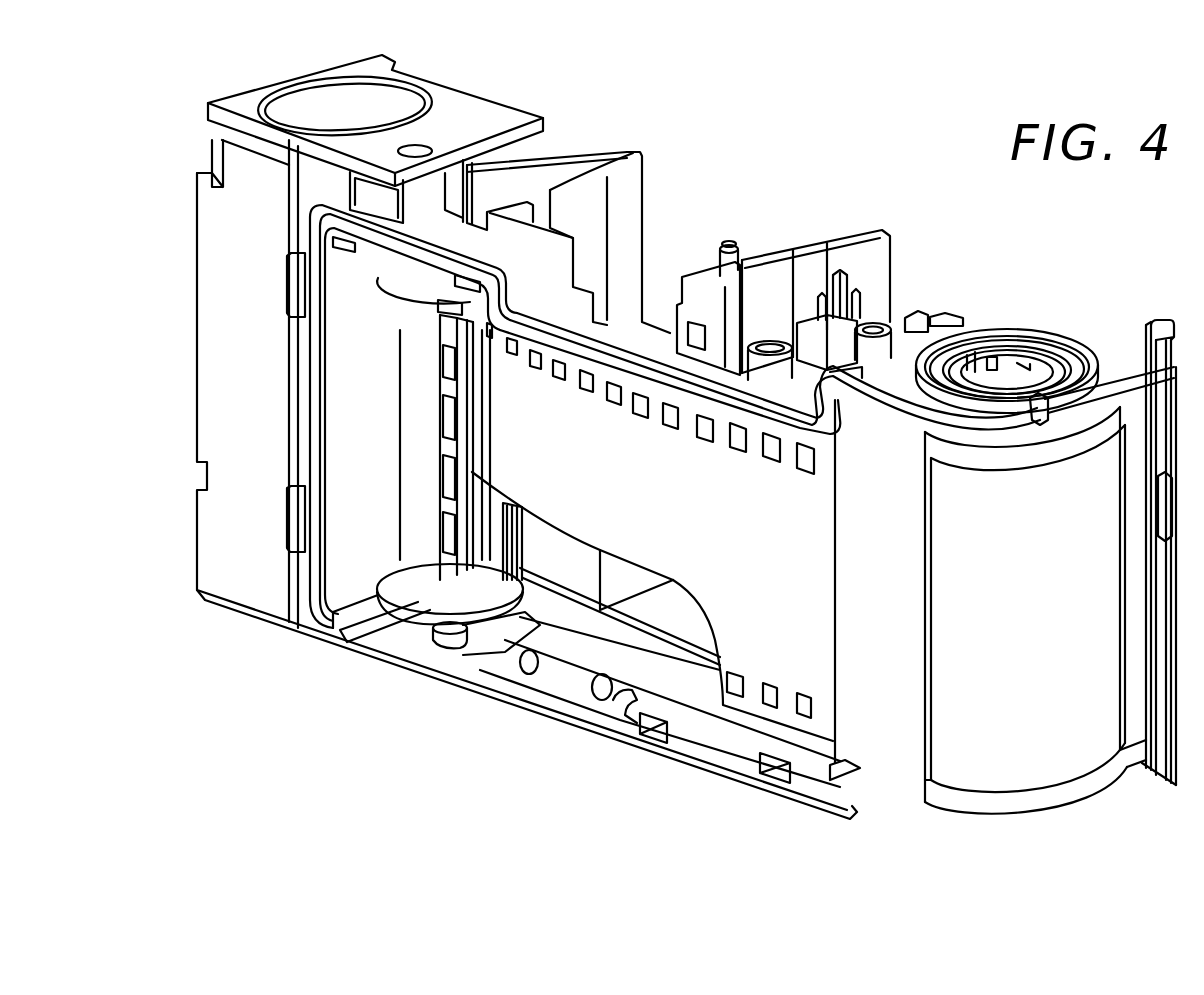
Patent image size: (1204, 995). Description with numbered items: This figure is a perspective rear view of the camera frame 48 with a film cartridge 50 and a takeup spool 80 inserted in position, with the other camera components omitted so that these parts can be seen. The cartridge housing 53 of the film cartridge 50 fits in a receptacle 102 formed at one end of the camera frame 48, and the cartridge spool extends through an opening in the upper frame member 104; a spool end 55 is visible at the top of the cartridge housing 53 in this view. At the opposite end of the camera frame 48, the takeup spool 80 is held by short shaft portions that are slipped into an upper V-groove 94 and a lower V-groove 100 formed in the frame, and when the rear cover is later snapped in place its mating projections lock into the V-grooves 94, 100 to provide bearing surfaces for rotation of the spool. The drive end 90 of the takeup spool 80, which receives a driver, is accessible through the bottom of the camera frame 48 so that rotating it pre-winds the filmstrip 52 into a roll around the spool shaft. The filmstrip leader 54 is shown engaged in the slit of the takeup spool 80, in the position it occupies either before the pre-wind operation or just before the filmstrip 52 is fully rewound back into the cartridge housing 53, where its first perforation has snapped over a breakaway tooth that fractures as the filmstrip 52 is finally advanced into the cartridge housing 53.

The camera frame 48 is at (224, 627).
The film cartridge 50 is at (958, 796).
The filmstrip 52 is at (805, 604).
The cartridge housing 53 is at (1052, 698).
The filmstrip leader 54 is at (607, 486).
The spool end / cartridge spool 55 is at (1016, 362).
The takeup spool 80 is at (413, 424).
The drive end 90 is at (449, 654).
The upper V-groove 94 is at (402, 265).
The lower V-groove 100 is at (396, 650).
The receptacle 102 is at (1136, 790).
The upper frame member 104 is at (1112, 362).